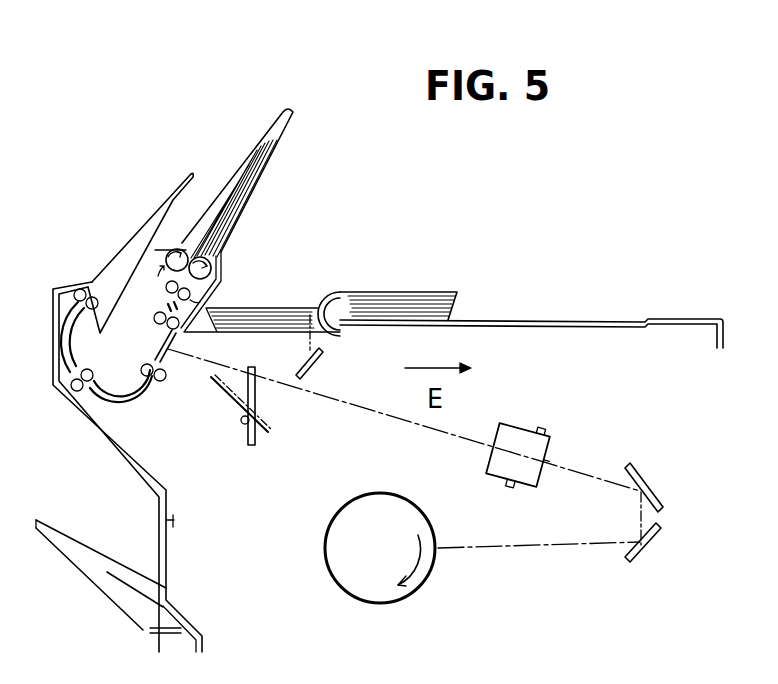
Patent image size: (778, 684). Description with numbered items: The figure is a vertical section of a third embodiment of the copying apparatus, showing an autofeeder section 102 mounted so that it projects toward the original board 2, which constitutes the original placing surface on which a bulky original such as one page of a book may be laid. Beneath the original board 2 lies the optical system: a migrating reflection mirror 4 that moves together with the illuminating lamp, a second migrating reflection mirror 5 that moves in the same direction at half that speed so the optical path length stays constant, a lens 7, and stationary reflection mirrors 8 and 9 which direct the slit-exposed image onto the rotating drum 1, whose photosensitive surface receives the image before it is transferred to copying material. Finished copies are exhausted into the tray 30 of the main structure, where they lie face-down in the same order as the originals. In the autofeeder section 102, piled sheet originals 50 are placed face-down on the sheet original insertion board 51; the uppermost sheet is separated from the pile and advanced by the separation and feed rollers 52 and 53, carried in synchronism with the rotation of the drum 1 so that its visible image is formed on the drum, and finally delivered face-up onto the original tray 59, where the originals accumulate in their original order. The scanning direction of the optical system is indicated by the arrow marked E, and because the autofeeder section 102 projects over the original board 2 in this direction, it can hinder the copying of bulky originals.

The autofeeder section 102 is at (208, 88).
The piled sheet originals 50 is at (252, 162).
The sheet original insertion board 51 is at (291, 114).
The original tray 59 is at (173, 200).
The separation and feed roller 52 is at (176, 251).
The separation and feed roller 53 is at (212, 263).
The original board 2 is at (527, 318).
The migrating reflection mirror 4 is at (323, 361).
The migrating reflection mirror 5 is at (246, 433).
The lens 7 is at (566, 448).
The stationary reflection mirror 8 is at (646, 481).
The stationary reflection mirror 9 is at (648, 543).
The drum 1 is at (426, 580).
The tray 30 is at (67, 563).